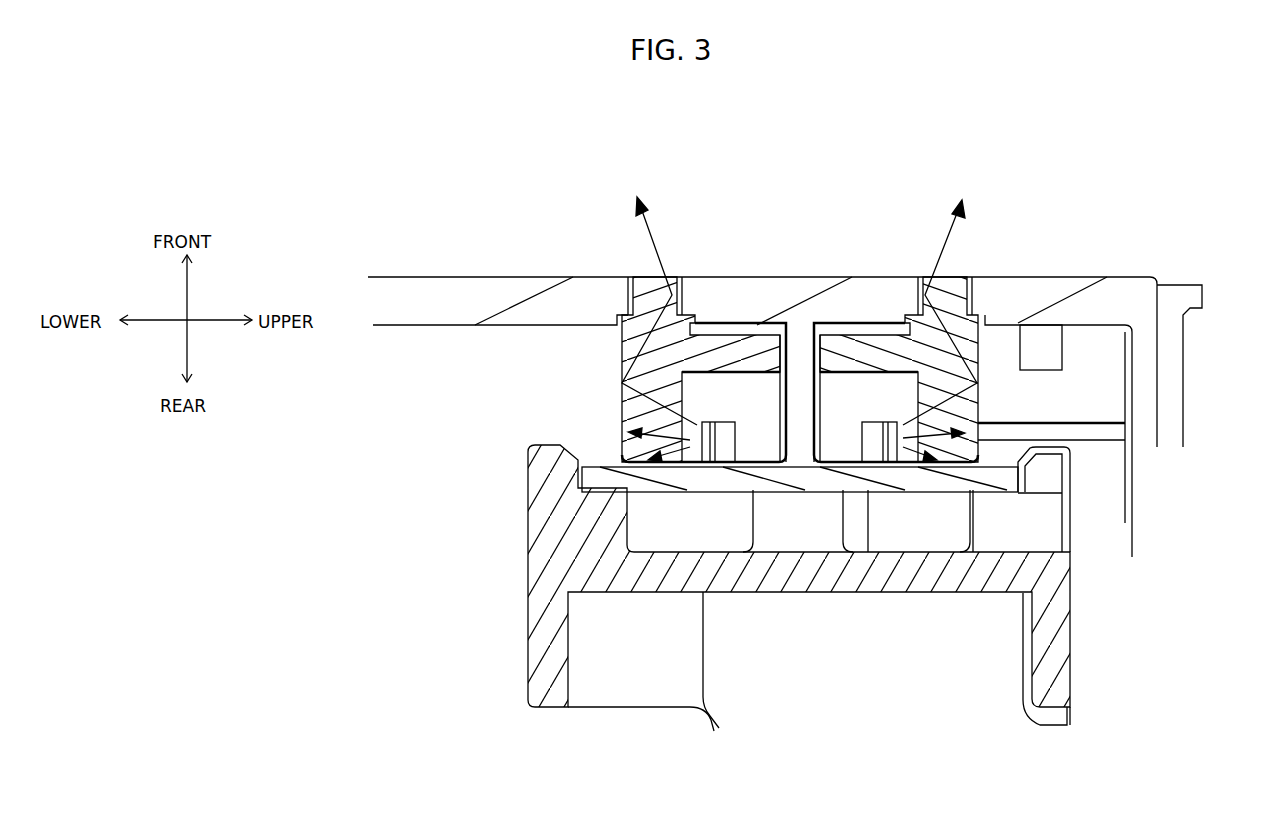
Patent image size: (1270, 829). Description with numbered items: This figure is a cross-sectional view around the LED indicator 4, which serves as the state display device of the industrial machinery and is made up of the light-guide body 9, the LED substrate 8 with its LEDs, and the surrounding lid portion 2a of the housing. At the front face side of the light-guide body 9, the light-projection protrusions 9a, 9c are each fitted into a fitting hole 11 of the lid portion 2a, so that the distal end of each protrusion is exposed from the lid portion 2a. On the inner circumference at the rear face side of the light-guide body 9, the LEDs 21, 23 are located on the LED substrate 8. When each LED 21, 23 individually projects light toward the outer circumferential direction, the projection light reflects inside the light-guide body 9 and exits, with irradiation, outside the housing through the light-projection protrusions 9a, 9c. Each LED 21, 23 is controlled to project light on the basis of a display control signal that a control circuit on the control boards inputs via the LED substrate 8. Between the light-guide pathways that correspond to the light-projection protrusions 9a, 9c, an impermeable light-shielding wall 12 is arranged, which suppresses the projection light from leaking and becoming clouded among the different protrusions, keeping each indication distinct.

The lid portion 2a is at (453, 285).
The LED indicator 4 is at (836, 210).
The LED substrate 8 is at (604, 476).
The light-guide body 9 is at (898, 435).
The light-projection protrusion 9a is at (952, 282).
The light-projection protrusion 9c is at (650, 295).
The fitting hole 11 is at (660, 306).
The light-shielding wall 12 is at (795, 405).
The LED 21 is at (877, 455).
The LED 23 is at (718, 465).